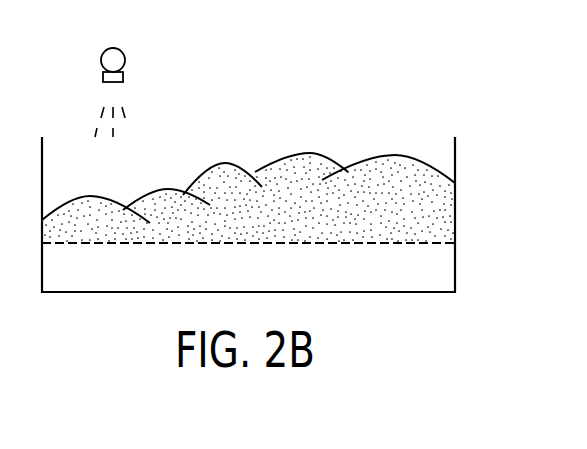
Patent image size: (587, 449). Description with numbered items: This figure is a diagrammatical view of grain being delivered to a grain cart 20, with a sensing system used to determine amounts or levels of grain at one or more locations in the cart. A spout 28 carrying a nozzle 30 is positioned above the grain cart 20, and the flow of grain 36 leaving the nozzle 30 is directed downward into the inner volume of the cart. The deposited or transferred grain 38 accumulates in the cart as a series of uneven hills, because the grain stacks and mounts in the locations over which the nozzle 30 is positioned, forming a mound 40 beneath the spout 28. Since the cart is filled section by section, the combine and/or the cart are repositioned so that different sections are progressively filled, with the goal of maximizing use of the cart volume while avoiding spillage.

The grain cart 20 is at (457, 287).
The spout 28 is at (104, 51).
The nozzle 30 is at (124, 77).
The flow of grain 36 is at (127, 133).
The deposited grain 38 is at (383, 193).
The mound of grain 40 is at (87, 195).